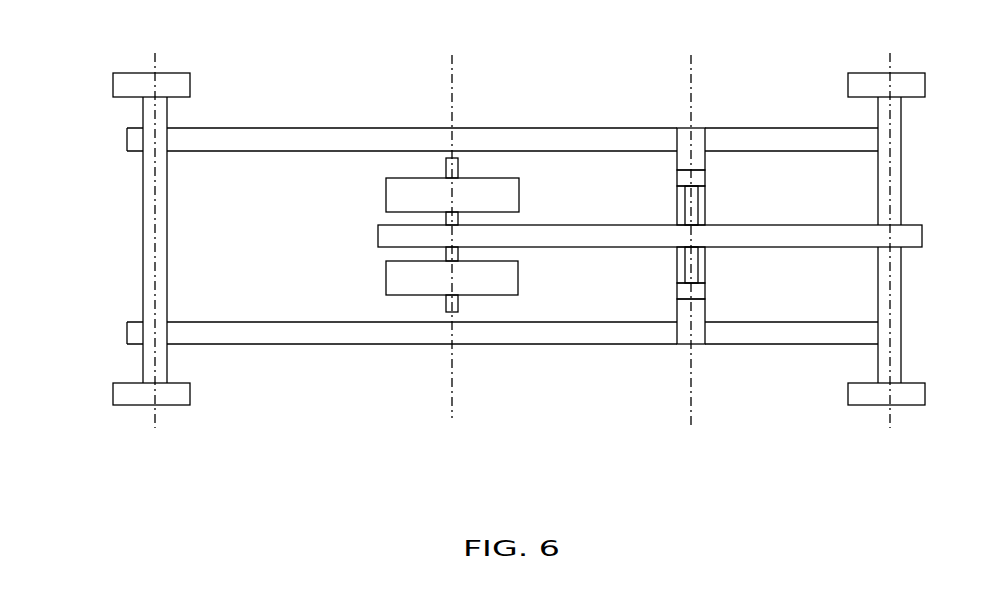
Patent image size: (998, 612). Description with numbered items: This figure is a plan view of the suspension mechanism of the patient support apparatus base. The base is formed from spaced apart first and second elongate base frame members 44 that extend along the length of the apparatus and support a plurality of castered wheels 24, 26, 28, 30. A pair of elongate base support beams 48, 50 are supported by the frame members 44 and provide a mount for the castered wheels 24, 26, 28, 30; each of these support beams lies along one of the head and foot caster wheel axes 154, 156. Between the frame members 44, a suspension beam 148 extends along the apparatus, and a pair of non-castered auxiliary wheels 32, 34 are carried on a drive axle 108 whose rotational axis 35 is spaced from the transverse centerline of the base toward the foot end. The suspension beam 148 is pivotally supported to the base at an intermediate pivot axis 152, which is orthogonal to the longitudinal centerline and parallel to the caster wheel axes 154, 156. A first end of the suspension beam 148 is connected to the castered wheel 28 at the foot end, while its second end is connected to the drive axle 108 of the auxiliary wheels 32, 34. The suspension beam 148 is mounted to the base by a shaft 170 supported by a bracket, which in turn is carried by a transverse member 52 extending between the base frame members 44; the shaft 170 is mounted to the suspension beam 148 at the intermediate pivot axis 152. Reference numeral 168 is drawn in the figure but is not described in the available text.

The castered wheel 24 is at (125, 400).
The castered wheel 26 is at (125, 80).
The castered wheel 28 is at (910, 390).
The castered wheel 30 is at (910, 80).
The auxiliary wheel 32 is at (487, 187).
The auxiliary wheel 34 is at (492, 285).
The rotational axis 35 is at (450, 63).
The base frame member 44 is at (244, 137).
The base support beam 48 is at (898, 190).
The base support beam 50 is at (148, 225).
The transverse member 52 is at (700, 312).
The drive axle 108 is at (445, 253).
The suspension beam 148 is at (590, 232).
The pivot axis 152 is at (693, 413).
The caster wheel axis 154 is at (893, 416).
The caster wheel axis 156 is at (158, 416).
The bearing housing 168 is at (706, 176).
The shaft 170 is at (683, 253).